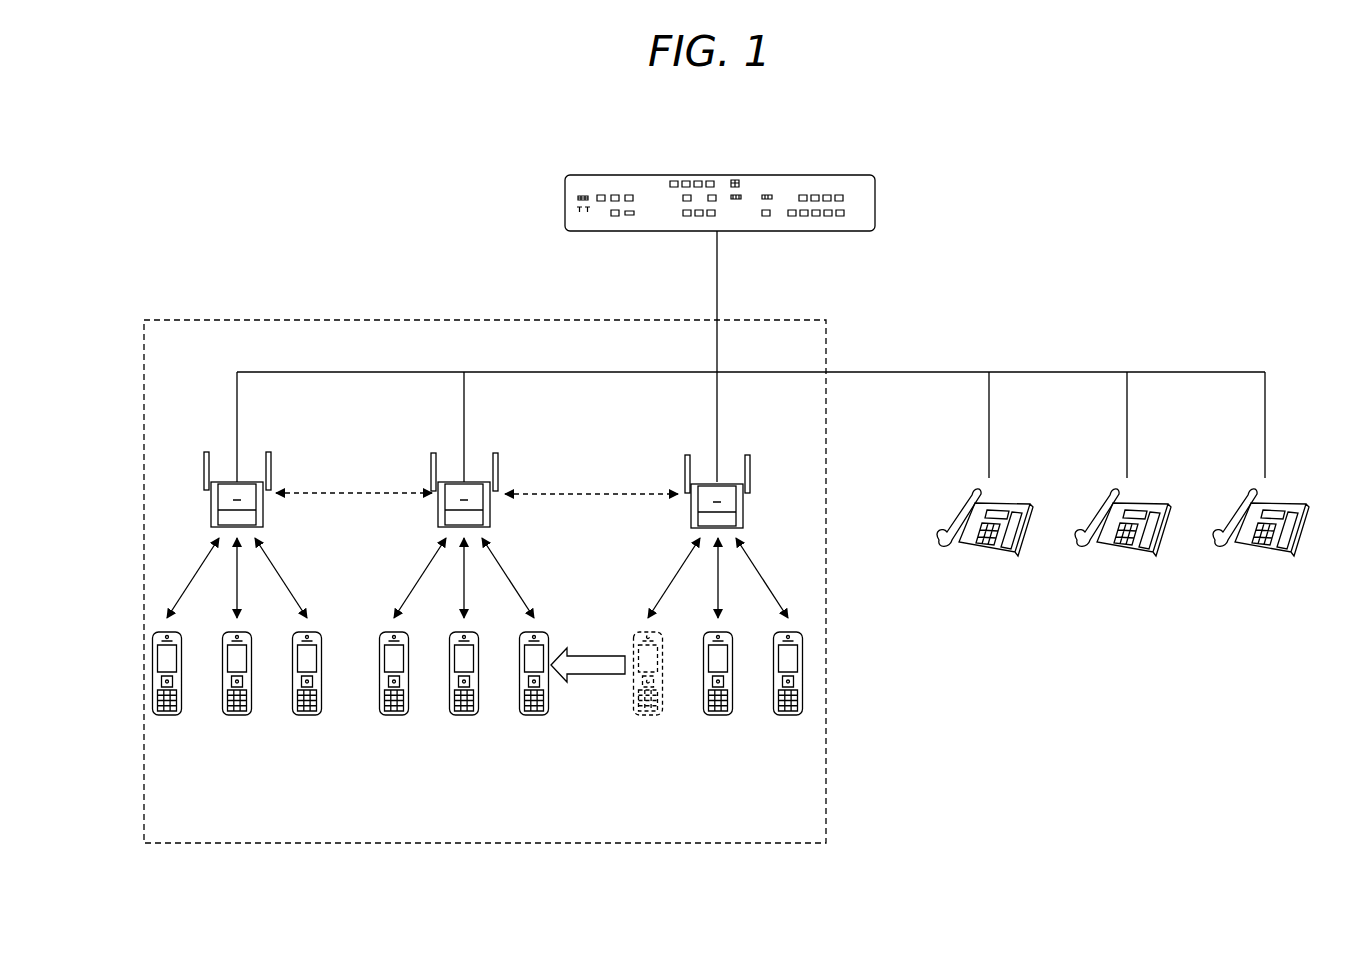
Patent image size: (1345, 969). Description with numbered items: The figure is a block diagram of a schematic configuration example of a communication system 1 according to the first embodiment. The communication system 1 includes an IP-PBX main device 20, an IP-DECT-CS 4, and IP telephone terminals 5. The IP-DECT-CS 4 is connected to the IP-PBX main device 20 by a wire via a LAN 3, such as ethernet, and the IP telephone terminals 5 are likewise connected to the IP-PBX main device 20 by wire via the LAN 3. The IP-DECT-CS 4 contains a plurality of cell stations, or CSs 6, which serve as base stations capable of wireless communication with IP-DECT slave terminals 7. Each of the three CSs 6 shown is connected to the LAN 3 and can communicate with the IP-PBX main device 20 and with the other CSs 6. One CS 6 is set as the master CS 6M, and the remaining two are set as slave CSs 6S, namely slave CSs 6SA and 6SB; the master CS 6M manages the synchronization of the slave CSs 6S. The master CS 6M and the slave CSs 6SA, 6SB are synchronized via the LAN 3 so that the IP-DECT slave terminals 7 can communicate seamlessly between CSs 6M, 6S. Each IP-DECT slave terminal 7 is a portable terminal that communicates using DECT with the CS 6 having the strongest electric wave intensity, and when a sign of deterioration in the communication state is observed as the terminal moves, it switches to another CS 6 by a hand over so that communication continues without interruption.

The communication system 1 is at (1031, 156).
The IP-PBX main device 20 is at (875, 203).
The LAN 3 is at (718, 281).
The IP-DECT-CS 4 is at (826, 786).
The cell station (CS) 6 is at (505, 462).
The master CS 6M is at (238, 481).
The slave CS 6S is at (618, 462).
The slave CS 6SA is at (466, 481).
The slave CS 6SB is at (722, 484).
The IP-DECT slave terminal 7 is at (237, 715).
The IP telephone terminal 5 is at (1123, 550).